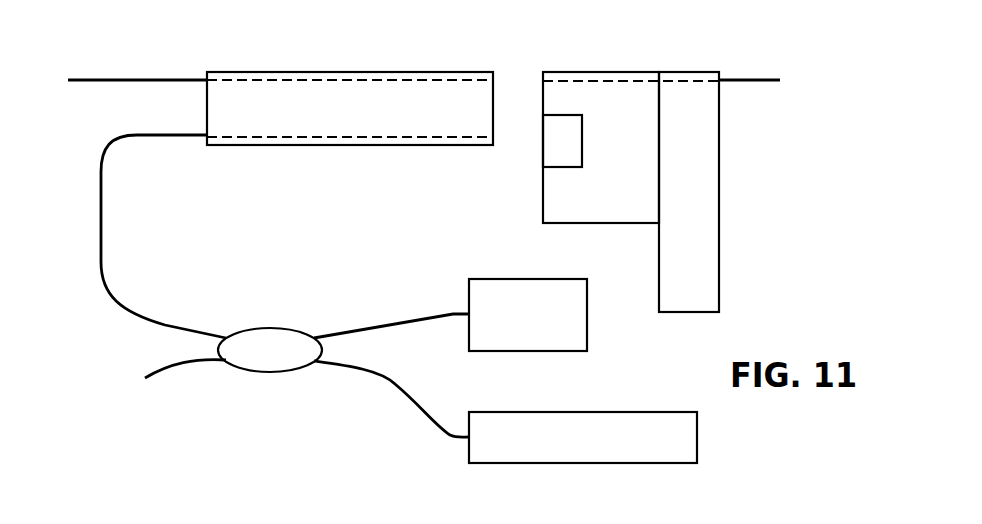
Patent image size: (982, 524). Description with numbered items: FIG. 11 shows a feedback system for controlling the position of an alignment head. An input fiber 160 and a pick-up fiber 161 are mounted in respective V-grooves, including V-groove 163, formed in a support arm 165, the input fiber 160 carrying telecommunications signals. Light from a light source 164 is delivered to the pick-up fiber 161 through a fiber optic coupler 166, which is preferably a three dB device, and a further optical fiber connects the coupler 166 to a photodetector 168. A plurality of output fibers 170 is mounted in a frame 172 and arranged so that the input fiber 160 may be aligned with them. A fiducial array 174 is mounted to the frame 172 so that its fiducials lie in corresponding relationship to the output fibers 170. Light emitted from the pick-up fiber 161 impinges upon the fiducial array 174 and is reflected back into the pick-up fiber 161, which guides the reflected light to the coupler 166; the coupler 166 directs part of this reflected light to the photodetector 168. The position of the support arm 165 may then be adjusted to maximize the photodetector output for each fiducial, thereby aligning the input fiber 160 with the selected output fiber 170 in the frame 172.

The input fiber 160 is at (140, 79).
The pick-up fiber 161 is at (176, 138).
The V-groove 163 is at (283, 79).
The light source 164 is at (377, 139).
The support arm 165 is at (294, 148).
The fiber optic coupler 166 is at (270, 328).
The photodetector 168 is at (469, 453).
The output fibers 170 is at (767, 82).
The frame 172 is at (719, 205).
The fiducial array 174 is at (543, 154).